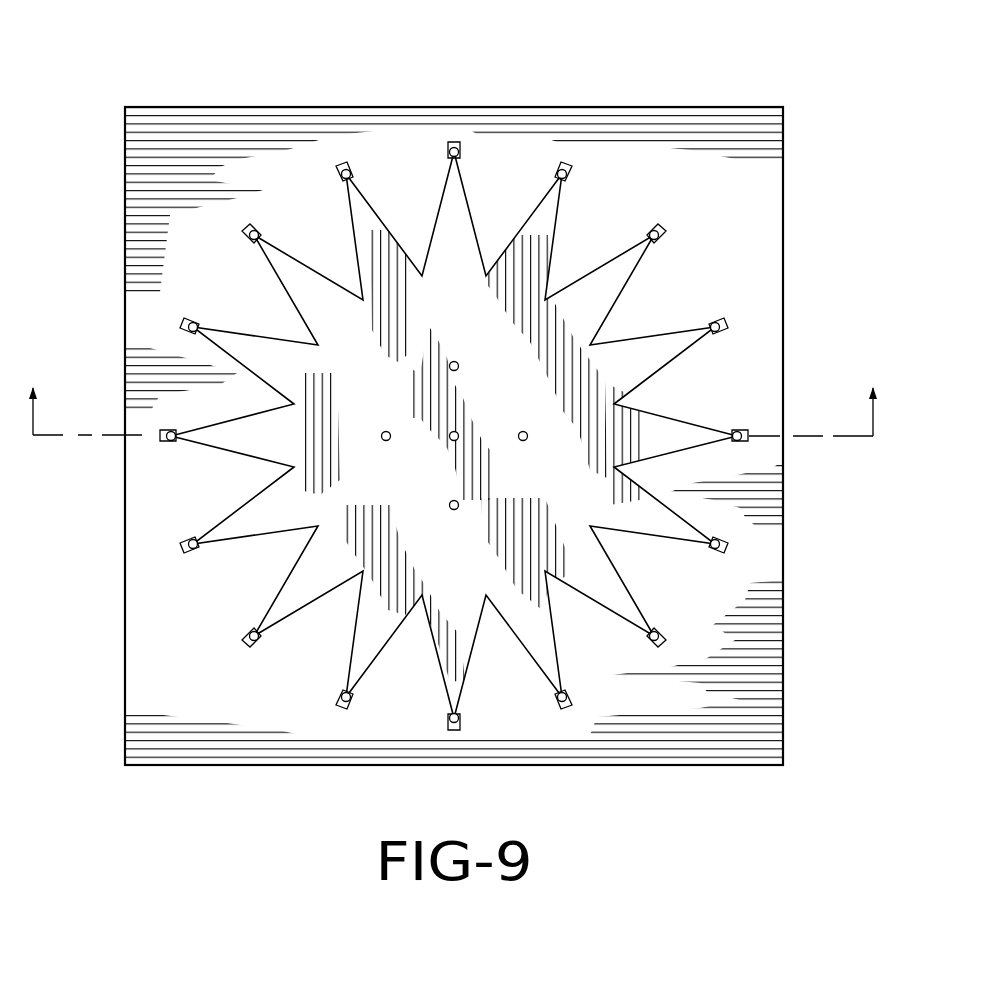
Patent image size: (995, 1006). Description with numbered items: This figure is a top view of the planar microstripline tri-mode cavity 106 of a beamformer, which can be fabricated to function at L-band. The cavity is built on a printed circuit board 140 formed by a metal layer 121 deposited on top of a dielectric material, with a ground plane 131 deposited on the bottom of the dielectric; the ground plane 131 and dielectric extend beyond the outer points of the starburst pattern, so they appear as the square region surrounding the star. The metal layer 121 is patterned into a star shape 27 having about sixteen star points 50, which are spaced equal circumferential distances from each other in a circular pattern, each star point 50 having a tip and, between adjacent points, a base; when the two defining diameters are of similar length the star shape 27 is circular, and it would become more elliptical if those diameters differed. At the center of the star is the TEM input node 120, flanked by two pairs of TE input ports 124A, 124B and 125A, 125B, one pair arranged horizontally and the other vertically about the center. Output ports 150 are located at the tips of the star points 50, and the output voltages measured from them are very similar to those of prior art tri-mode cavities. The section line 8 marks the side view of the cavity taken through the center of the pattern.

The printed circuit board 140 is at (275, 93).
The planar microstripline tri-mode cavity 106 is at (653, 67).
The ground plane 131 is at (732, 209).
The metal layer 121 is at (332, 402).
The output ports 150 is at (360, 160).
The star points 50 is at (345, 211).
The star shape 27 is at (354, 613).
The section line for side view 8 is at (452, 393).
The TEM input node 120 is at (455, 430).
The TE input port 125A is at (453, 361).
The TE input port 125B is at (453, 510).
The TE input port 124A is at (386, 441).
The TE input port 124B is at (523, 441).